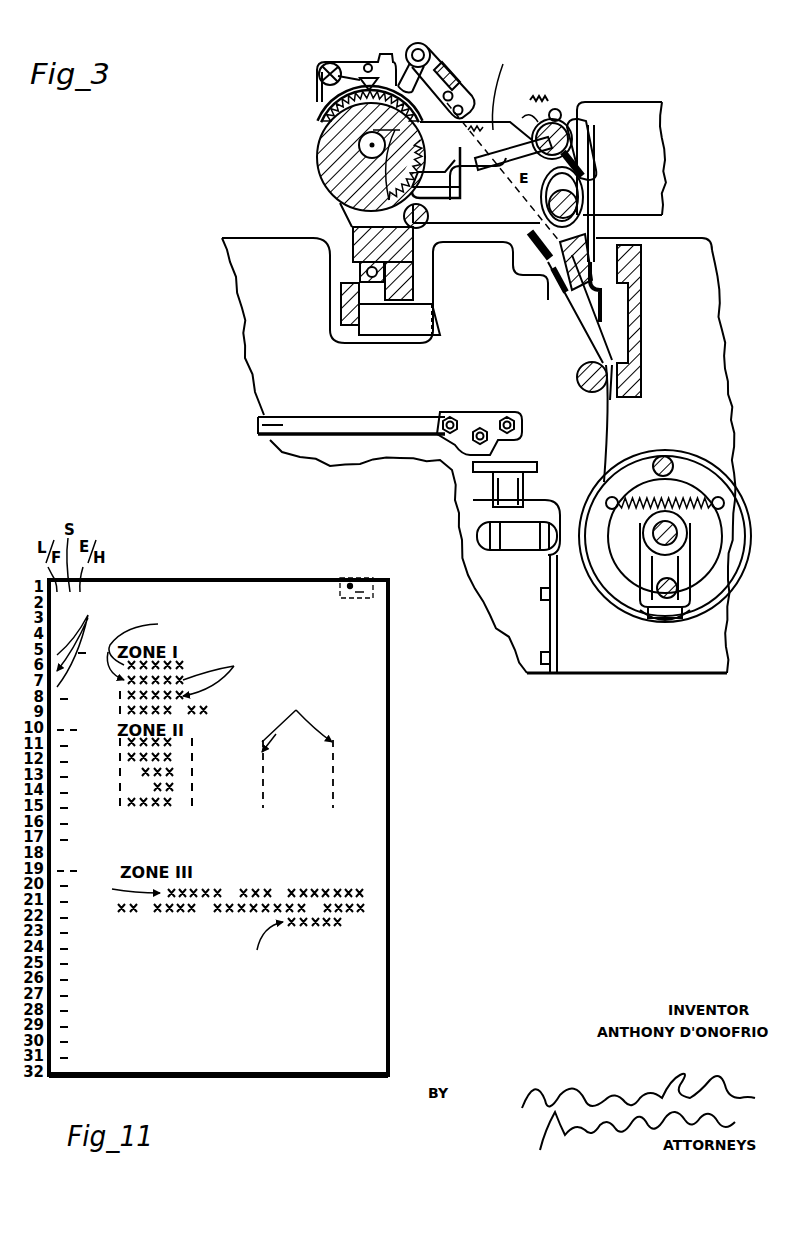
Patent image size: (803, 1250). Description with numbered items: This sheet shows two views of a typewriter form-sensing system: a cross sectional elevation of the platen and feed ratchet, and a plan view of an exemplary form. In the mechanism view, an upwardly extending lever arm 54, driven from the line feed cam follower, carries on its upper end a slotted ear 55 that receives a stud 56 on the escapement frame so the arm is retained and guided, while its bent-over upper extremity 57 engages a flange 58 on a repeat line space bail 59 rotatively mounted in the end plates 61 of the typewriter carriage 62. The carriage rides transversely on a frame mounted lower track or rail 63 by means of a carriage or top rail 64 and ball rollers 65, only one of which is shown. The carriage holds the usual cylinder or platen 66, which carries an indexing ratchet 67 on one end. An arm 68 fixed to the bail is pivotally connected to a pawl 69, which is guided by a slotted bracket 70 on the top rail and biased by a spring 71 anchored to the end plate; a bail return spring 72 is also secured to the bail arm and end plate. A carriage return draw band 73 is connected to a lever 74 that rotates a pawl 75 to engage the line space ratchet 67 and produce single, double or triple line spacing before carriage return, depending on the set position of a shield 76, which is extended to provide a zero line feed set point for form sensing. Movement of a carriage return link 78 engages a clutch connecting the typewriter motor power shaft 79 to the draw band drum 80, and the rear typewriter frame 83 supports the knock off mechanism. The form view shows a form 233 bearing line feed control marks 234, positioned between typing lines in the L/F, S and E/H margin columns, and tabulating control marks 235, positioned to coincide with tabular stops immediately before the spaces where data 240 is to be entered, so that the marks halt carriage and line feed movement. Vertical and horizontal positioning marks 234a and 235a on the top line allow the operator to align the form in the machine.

In FIG. 3, the lever arm 54 is at (596, 238).
In FIG. 3, the slotted ear 55 is at (586, 186).
In FIG. 3, the stud 56 is at (586, 203).
In FIG. 3, the upper extremity 57 is at (590, 143).
In FIG. 3, the flange 58 is at (571, 136).
In FIG. 3, the repeat line space bail 59 is at (536, 130).
In FIG. 3, the end plates 61 is at (502, 85).
In FIG. 3, the typewriter carriage 62 is at (648, 96).
In FIG. 3, the lower track or rail 63 is at (341, 318).
In FIG. 3, the carriage or top rail 64 is at (358, 240).
In FIG. 3, the ball rollers 65 is at (356, 279).
In FIG. 3, the cylinder or platen 66 is at (328, 166).
In FIG. 3, the indexing ratchet 67 is at (318, 145).
In FIG. 3, the arm 68 is at (560, 112).
In FIG. 3, the pawl 69 is at (512, 160).
In FIG. 3, the slotted bracket 70 is at (462, 202).
In FIG. 3, the spring 71 is at (478, 114).
In FIG. 3, the bail return spring 72 is at (548, 100).
In FIG. 3, the carriage return draw band 73 is at (608, 438).
In FIG. 3, the lever 74 is at (401, 68).
In FIG. 3, the pawl 75 is at (370, 76).
In FIG. 3, the shield 76 is at (320, 116).
In FIG. 3, the carriage return link 78 is at (260, 424).
In FIG. 3, the typewriter motor power shaft 79 is at (688, 532).
In FIG. 3, the draw band drum 80 is at (693, 614).
In FIG. 3, the rear typewriter frame 83 is at (642, 341).
In FIG. 11, the form 233 is at (214, 574).
In FIG. 11, the line feed control marks 234 is at (94, 644).
In FIG. 11, the vertical positioning mark 234a is at (351, 582).
In FIG. 11, the tabulating control marks 235 is at (226, 789).
In FIG. 11, the horizontal positioning mark 235a is at (361, 588).
In FIG. 11, the data 240 is at (230, 673).